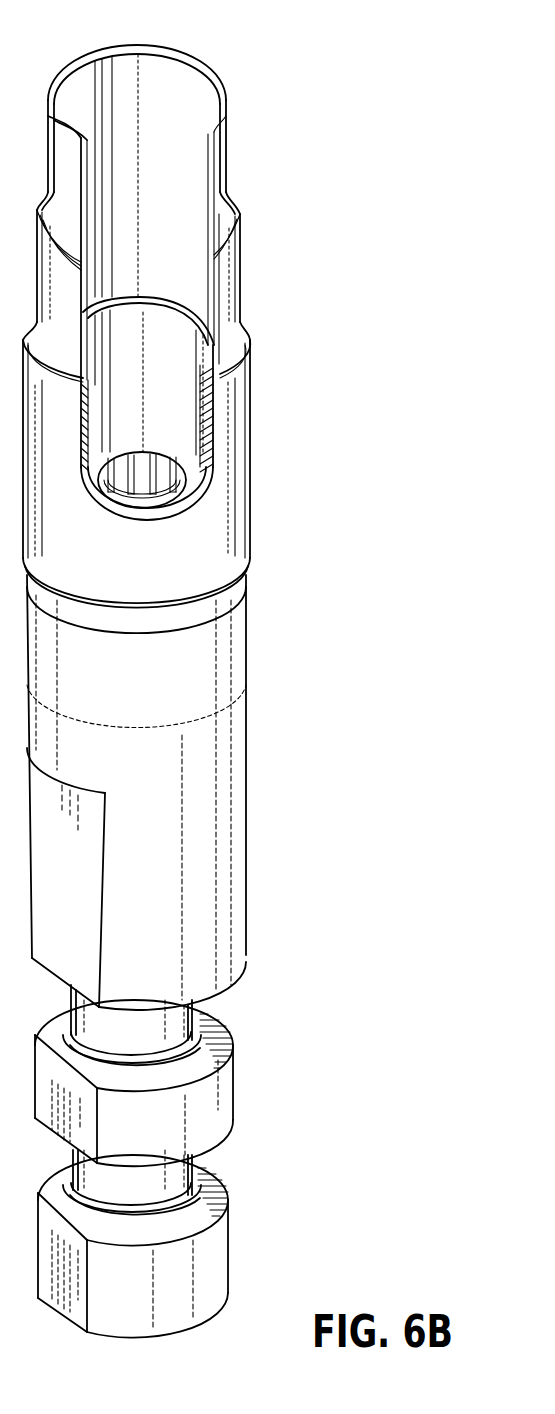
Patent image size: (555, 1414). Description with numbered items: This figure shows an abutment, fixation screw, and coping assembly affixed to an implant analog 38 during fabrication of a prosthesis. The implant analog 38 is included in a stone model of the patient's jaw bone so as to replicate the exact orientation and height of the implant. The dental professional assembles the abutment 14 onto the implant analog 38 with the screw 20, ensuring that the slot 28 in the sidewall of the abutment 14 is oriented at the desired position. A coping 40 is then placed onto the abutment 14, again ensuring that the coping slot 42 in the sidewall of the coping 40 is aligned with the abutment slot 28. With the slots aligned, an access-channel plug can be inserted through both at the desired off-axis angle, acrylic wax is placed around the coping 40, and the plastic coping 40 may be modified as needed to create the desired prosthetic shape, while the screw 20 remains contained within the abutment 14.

The coping 40 is at (78, 53).
The coping slot 42 is at (213, 280).
The abutment 14 is at (161, 300).
The slot 28 is at (200, 423).
The screw 20 is at (177, 487).
The implant analog 38 is at (223, 790).